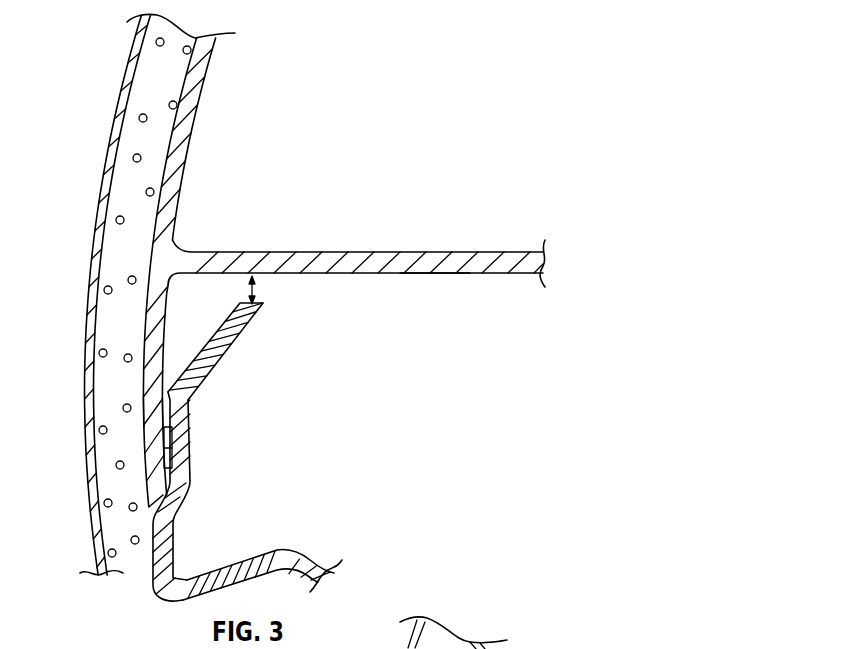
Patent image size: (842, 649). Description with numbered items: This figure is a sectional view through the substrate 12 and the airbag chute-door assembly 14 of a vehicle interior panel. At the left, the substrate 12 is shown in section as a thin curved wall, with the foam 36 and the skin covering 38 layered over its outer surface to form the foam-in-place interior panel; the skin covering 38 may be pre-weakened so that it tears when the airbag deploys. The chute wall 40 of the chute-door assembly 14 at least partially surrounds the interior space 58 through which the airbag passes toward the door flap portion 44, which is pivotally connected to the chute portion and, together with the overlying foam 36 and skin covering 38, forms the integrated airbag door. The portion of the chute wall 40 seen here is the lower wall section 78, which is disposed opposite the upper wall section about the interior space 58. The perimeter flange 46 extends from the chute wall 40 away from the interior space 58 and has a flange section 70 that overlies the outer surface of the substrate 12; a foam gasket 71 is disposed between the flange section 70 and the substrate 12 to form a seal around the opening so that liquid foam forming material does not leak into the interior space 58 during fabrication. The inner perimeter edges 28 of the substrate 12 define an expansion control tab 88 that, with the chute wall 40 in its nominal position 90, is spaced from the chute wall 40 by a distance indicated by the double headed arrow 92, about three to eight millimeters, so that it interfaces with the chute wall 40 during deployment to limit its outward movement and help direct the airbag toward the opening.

The substrate 12 is at (293, 551).
The airbag chute-door assembly 14 is at (198, 250).
The inner perimeter edges 28 is at (250, 328).
The foam 36 is at (103, 270).
The skin covering 38 is at (120, 93).
The chute wall 40 is at (477, 274).
The door flap portion 44 is at (197, 113).
The perimeter flange 46 is at (152, 422).
The interior space 58 is at (329, 133).
The flange section 70 is at (170, 452).
The foam gasket 71 is at (176, 458).
The lower wall section 78 is at (420, 274).
The expansion control tab 88 is at (217, 373).
The nominal position 90 is at (339, 301).
The double headed arrow 92 is at (258, 290).